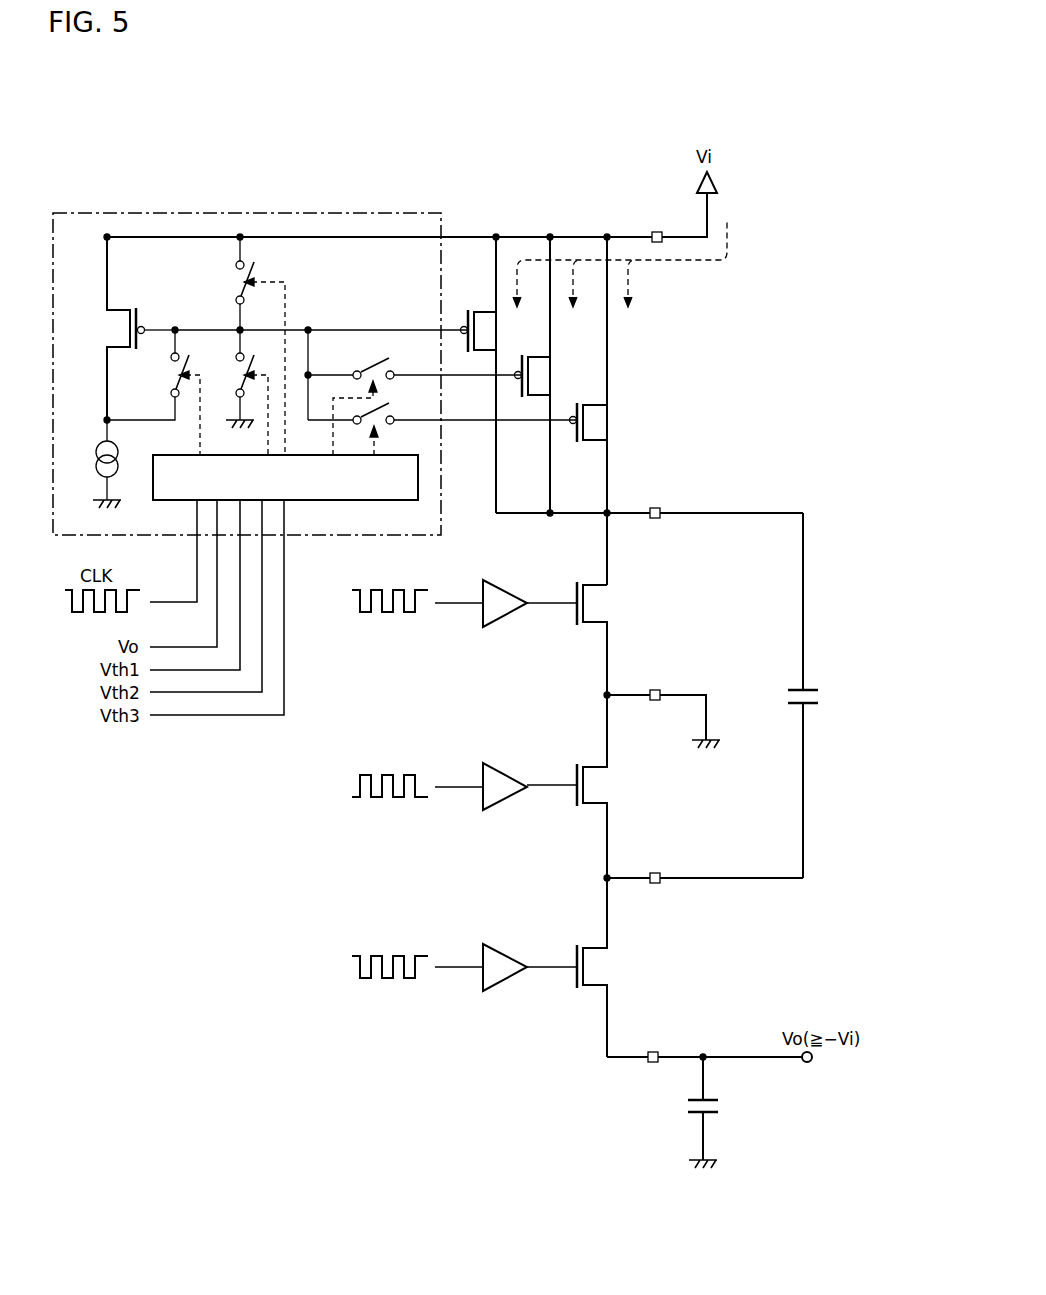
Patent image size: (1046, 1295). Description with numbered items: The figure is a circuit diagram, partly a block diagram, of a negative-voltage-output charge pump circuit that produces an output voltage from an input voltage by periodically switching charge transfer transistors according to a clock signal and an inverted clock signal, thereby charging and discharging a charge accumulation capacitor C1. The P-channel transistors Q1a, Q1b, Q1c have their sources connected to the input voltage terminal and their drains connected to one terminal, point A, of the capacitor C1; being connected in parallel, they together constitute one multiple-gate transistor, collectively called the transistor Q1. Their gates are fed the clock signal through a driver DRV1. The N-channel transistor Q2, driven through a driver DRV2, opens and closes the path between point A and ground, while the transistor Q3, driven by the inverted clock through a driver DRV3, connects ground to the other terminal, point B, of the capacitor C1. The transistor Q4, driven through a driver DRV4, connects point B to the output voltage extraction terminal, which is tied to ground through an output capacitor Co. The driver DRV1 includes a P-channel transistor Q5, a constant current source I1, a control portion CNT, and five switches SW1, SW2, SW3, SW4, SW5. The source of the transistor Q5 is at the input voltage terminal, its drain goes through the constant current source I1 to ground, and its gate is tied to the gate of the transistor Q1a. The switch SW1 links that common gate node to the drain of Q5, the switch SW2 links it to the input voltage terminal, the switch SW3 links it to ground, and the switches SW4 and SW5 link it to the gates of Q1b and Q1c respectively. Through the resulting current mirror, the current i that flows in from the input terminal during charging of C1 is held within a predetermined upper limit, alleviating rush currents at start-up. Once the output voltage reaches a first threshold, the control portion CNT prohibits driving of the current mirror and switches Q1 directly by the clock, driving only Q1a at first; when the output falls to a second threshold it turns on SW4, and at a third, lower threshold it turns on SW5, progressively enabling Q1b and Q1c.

The driver DRV1 is at (270, 213).
The P-channel field-effect transistor Q5 is at (121, 328).
The constant current source I1 is at (96, 463).
The switch SW1 is at (153, 392).
The switch SW2 is at (233, 346).
The switch SW3 is at (228, 370).
The switch SW4 is at (385, 370).
The switch SW5 is at (388, 413).
The control portion CNT is at (355, 500).
The transistor Q1 is at (588, 411).
The P-channel field-effect transistor Q1a is at (506, 375).
The P-channel field-effect transistor Q1b is at (555, 375).
The P-channel field-effect transistor Q1c is at (666, 305).
The N-channel field-effect transistor Q2 is at (585, 638).
The N-channel field-effect transistor Q3 is at (585, 786).
The N-channel field-effect transistor Q4 is at (585, 967).
The driver DRV2 is at (503, 622).
The driver DRV3 is at (503, 806).
The driver DRV4 is at (503, 986).
The charge accumulation capacitor C1 is at (827, 695).
The output capacitor Co is at (723, 1112).
The point A is at (604, 518).
The point B is at (602, 878).
The current i is at (626, 264).